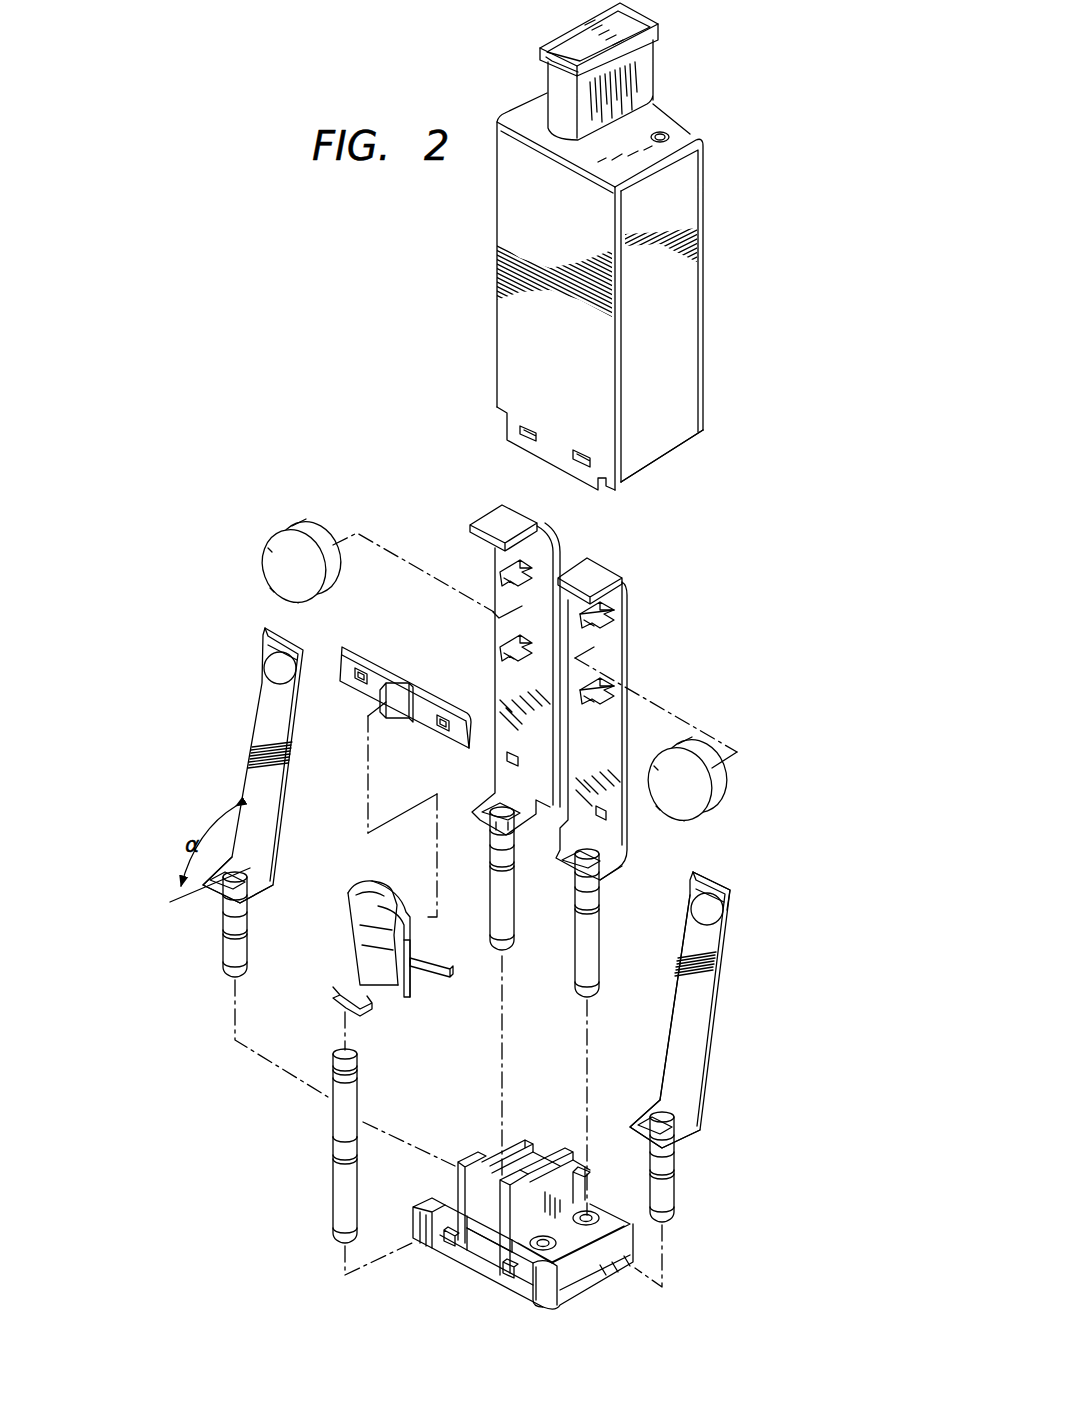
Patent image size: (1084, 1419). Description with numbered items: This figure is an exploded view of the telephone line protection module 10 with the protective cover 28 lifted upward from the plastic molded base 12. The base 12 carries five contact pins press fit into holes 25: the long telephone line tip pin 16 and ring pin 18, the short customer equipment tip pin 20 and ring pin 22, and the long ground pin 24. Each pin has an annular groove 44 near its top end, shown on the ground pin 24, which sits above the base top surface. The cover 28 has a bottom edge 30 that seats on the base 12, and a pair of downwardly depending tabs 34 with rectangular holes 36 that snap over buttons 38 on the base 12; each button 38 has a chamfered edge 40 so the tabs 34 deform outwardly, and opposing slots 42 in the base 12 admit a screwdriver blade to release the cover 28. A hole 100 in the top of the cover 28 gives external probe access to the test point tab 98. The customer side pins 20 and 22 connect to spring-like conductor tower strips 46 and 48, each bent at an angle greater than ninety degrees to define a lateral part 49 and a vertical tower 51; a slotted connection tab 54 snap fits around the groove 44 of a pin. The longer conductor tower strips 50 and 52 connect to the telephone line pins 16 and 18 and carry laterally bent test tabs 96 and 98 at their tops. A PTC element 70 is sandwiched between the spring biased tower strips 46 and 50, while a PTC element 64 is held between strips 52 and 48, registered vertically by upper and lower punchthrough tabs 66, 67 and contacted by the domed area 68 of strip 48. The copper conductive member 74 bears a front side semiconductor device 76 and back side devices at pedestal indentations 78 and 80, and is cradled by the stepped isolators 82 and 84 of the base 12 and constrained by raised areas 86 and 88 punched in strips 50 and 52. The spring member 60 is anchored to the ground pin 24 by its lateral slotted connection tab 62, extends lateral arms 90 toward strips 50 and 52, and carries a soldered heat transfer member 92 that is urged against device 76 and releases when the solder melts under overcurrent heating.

The telephone line protection module 10 is at (352, 296).
The plastic molded base 12 is at (610, 1272).
The telephone line tip pin 16 is at (517, 886).
The telephone line ring pin 18 is at (603, 938).
The customer equipment tip pin 20 is at (229, 950).
The customer equipment ring pin 22 is at (676, 1192).
The ground pin 24 is at (336, 1181).
The holes 25 is at (565, 1278).
The protective cover 28 is at (685, 313).
The bottom edge 30 is at (662, 458).
The downwardly depending tabs 34 is at (558, 456).
The rectangular-shaped holes 36 is at (514, 440).
The button 38 is at (446, 1251).
The tapered or chamfered edge 40 is at (508, 1283).
The slots 42 is at (484, 1263).
The annular groove 44 is at (362, 1082).
The conductor tower strip 46 is at (260, 725).
The conductor tower strip 48 is at (734, 1023).
The lateral part 49 is at (678, 1133).
The conductor tower strip 50 is at (498, 568).
The vertical tower 51 is at (678, 1039).
The conductor tower strip 52 is at (607, 652).
The slotted connection tab 54 is at (257, 893).
The spring member 60 is at (352, 881).
The lateral slotted connection tab 62 is at (362, 1005).
The positive temperature coefficient (PTC) element 64 is at (725, 776).
The upper punchthrough tab 66 is at (622, 621).
The lower punchthrough tab 67 is at (590, 705).
The domed or cupped area 68 is at (715, 917).
The PTC element 70 is at (312, 536).
The copper conductive member 74 is at (337, 663).
The front side semiconductor device 76 is at (398, 688).
The pedestal indentation 78 is at (359, 684).
The pedestal indentation 80 is at (440, 736).
The stepped isolator 82 is at (478, 1173).
The stepped isolator 84 is at (567, 1173).
The raised area 86 is at (507, 759).
The raised area 88 is at (593, 813).
The lateral arm 90 is at (443, 960).
The heat transfer member 92 is at (402, 979).
The laterally bent tab 96 is at (485, 520).
The laterally bent tab 98 is at (597, 576).
The hole 100 is at (666, 130).